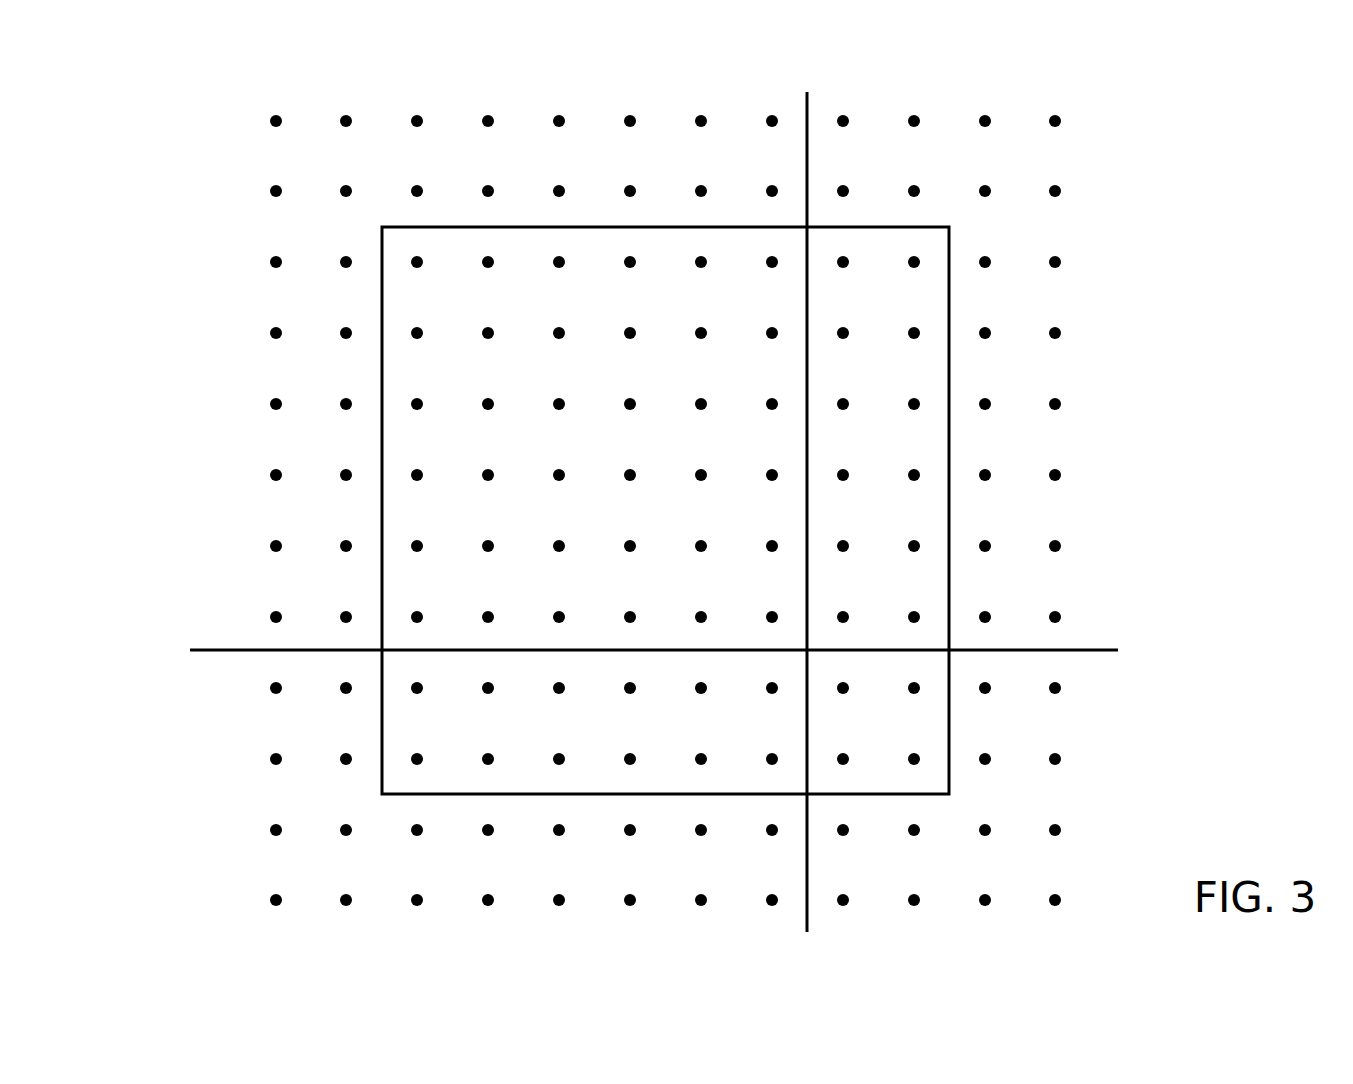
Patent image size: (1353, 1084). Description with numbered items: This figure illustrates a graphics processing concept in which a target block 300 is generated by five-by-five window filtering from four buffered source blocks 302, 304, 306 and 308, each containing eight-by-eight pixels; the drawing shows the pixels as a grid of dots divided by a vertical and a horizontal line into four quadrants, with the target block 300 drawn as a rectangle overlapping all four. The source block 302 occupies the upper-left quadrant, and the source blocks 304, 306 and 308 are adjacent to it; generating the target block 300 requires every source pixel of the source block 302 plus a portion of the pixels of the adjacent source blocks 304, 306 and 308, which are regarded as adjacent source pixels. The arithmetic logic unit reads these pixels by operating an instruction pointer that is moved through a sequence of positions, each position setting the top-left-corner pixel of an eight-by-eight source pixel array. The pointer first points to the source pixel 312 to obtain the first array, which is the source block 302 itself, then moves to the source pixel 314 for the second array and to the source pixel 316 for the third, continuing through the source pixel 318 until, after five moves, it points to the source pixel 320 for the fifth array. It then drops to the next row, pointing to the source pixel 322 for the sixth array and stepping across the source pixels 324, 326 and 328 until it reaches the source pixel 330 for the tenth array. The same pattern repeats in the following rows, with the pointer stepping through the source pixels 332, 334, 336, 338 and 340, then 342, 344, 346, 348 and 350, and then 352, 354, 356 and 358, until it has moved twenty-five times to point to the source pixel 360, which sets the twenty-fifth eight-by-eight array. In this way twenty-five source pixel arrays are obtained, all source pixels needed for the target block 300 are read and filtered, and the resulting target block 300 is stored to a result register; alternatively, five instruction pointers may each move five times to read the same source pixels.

The target block 300 is at (949, 437).
The source block 302 is at (178, 520).
The source block 304 is at (1142, 519).
The source block 306 is at (178, 784).
The source block 308 is at (1142, 766).
The source pixel 312 is at (271, 116).
The source pixel 314 is at (341, 116).
The source pixel 316 is at (412, 116).
The pixel 318 is at (483, 116).
The source pixel 320 is at (554, 116).
The source pixel 322 is at (271, 186).
The pixel 324 is at (341, 186).
The pixel 326 is at (412, 186).
The pixel 328 is at (483, 186).
The source pixel 330 is at (554, 186).
The pixel 332 is at (271, 268).
The pixel 334 is at (341, 268).
The pixel 336 is at (421, 267).
The pixel 338 is at (492, 267).
The pixel 340 is at (563, 267).
The pixel 342 is at (271, 339).
The pixel 344 is at (341, 339).
The pixel 346 is at (421, 338).
The pixel 348 is at (492, 338).
The pixel 350 is at (563, 338).
The pixel 352 is at (271, 410).
The pixel 354 is at (341, 410).
The pixel 356 is at (421, 409).
The pixel 358 is at (492, 409).
The source pixel 360 is at (563, 409).